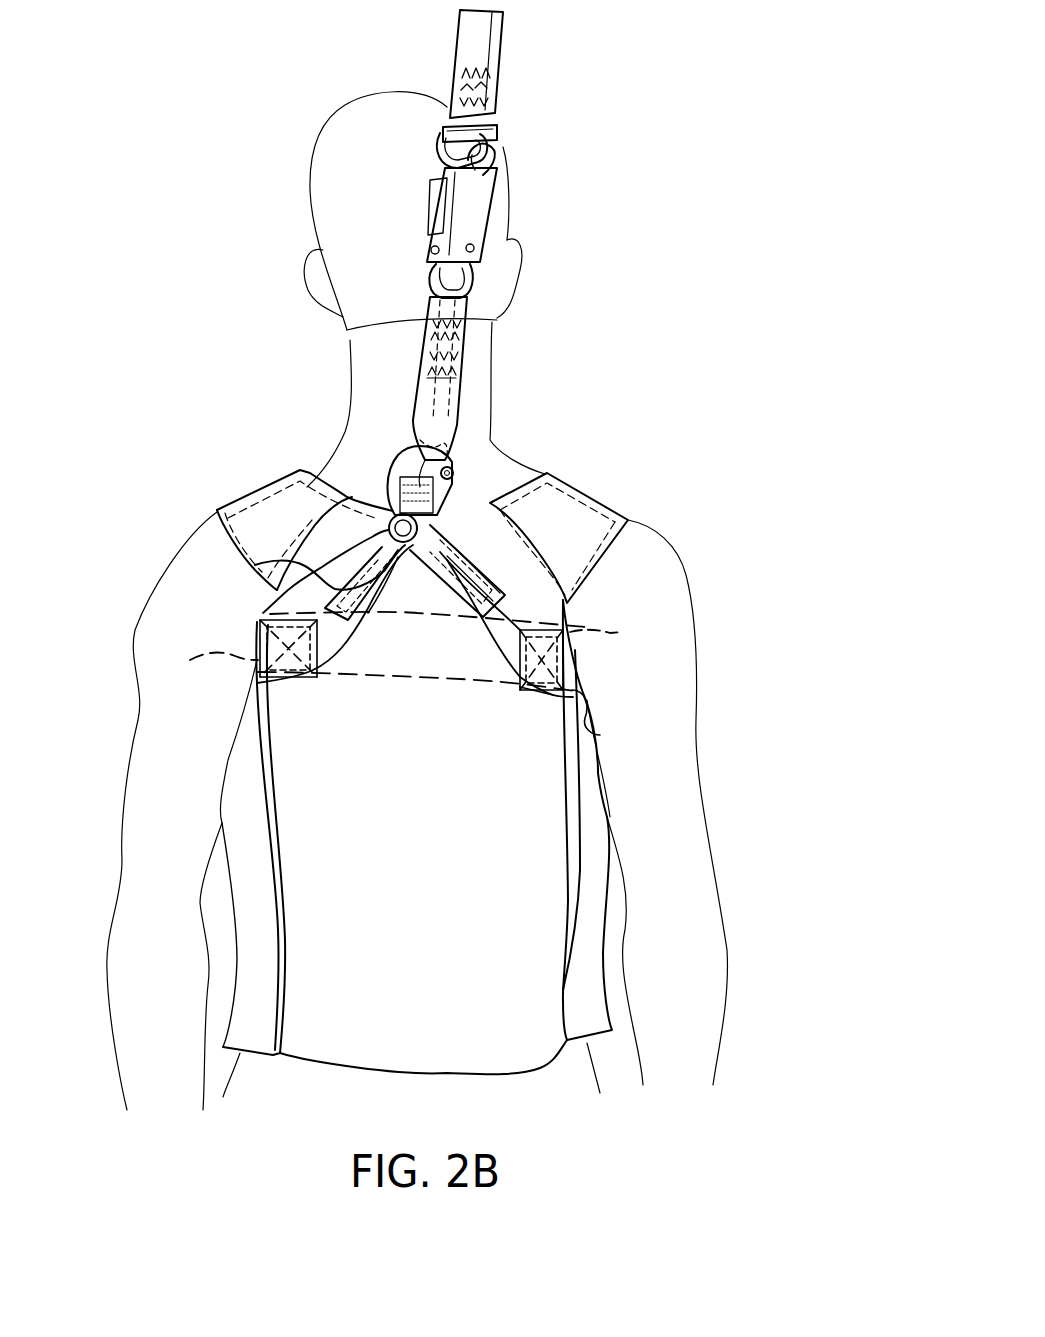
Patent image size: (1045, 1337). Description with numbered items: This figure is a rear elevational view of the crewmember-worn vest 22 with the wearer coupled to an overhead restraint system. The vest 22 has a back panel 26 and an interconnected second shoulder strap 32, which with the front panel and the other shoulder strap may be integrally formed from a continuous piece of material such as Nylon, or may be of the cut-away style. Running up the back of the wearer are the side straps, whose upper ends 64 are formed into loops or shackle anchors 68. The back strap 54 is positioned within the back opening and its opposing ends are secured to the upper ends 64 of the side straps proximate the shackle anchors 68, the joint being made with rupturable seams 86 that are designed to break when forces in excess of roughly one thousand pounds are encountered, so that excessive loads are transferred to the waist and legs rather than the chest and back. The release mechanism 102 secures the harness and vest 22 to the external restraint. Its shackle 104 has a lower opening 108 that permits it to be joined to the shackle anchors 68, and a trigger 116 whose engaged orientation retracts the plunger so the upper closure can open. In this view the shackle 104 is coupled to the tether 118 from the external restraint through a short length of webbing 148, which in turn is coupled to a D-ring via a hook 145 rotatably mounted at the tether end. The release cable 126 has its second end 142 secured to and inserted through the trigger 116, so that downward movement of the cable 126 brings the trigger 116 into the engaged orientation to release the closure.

The vest 22 is at (273, 500).
The back panel 26 is at (433, 857).
The second shoulder strap 32 is at (593, 513).
The back strap 54 is at (407, 660).
The upper ends of side straps 64 is at (327, 663).
The shackle anchor 68 is at (453, 563).
The rupturable seam 86 is at (405, 653).
The release mechanism 102 is at (478, 437).
The shackle 104 is at (418, 458).
The lower opening 108 is at (390, 462).
The trigger 116 is at (457, 470).
The tether 118 is at (480, 60).
The cable 126 is at (267, 590).
The second end of cable 142 is at (420, 573).
The hook 145 is at (478, 190).
The webbing 148 is at (458, 368).